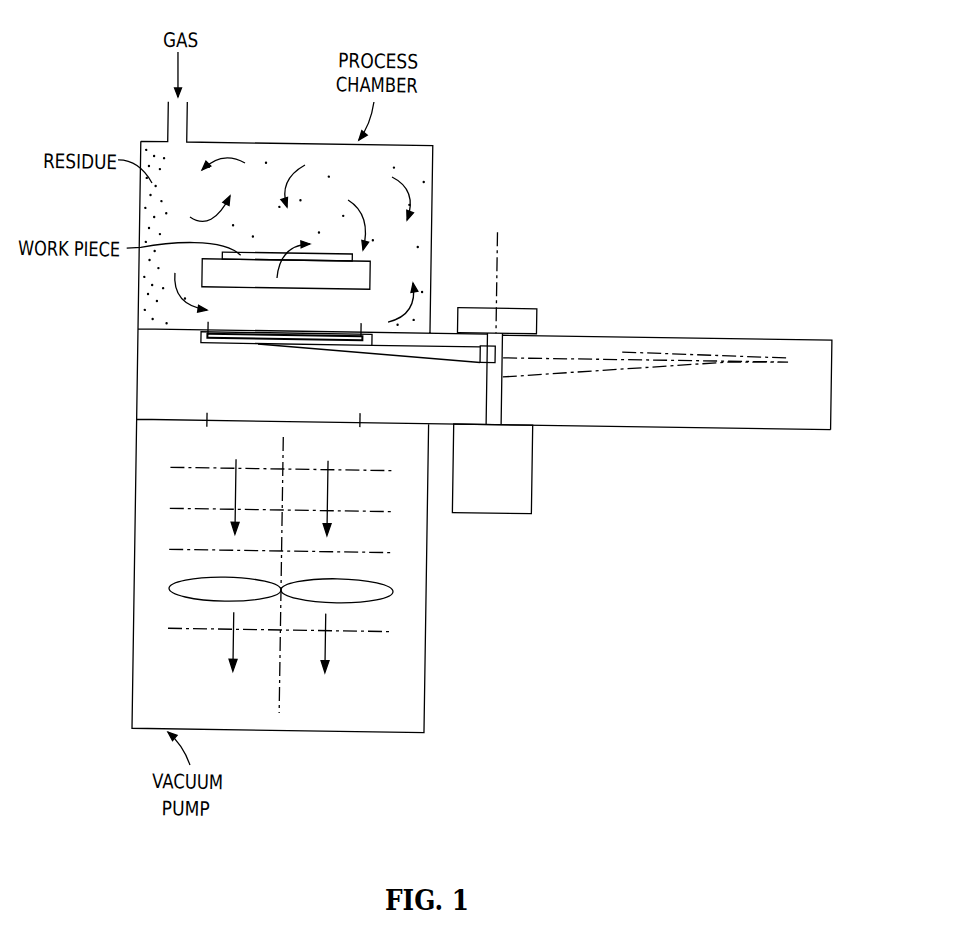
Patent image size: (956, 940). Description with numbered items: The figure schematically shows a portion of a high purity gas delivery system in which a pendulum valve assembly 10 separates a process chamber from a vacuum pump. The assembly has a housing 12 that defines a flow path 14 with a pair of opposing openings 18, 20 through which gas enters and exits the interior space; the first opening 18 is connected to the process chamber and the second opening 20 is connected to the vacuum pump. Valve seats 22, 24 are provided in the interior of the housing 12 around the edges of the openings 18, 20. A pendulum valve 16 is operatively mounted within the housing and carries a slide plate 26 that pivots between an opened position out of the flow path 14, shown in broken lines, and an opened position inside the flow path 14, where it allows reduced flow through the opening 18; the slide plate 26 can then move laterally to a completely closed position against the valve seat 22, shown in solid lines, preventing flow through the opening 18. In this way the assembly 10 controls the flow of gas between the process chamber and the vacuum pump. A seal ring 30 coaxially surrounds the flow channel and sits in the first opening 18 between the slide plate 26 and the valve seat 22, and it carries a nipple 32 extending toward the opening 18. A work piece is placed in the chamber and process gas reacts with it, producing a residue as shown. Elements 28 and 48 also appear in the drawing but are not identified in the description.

The pendulum valve assembly 10 is at (544, 371).
The housing 12 is at (720, 422).
The flow path 14 is at (278, 394).
The pendulum valve 16 is at (596, 347).
The first opening 18 is at (210, 333).
The second opening 20 is at (207, 421).
The valve seat 22 is at (358, 332).
The valve seat 24 is at (360, 419).
The slide plate 26 is at (209, 347).
The support post 28 is at (497, 399).
The seal ring 30 is at (417, 356).
The nipple 32 is at (500, 247).
The drive motor 48 is at (523, 481).